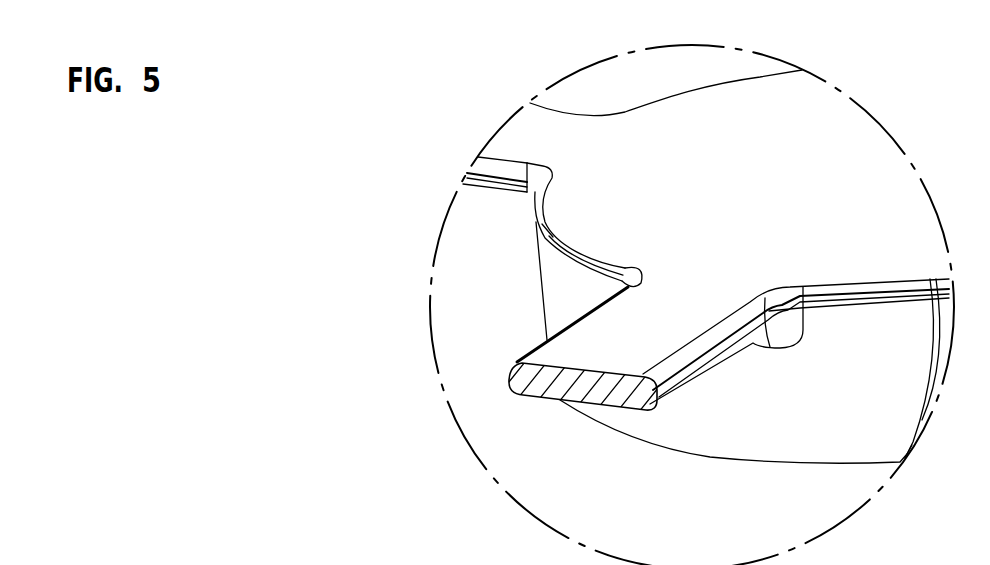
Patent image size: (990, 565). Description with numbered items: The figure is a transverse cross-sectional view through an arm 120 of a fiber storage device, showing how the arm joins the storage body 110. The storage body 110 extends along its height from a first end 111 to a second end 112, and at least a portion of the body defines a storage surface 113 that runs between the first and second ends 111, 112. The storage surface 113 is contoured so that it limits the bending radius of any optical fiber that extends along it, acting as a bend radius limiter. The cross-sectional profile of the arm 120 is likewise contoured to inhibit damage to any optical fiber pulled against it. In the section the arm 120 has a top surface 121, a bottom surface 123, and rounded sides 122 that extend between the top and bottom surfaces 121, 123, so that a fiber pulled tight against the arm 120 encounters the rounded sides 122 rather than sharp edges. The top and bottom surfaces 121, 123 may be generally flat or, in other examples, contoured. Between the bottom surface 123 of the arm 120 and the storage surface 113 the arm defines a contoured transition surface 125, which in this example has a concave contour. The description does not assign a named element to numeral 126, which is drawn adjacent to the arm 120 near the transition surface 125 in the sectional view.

The storage body 110 is at (530, 253).
The first end 111 is at (733, 466).
The second end 112 is at (840, 181).
The storage surface 113 is at (898, 415).
The arm 120 is at (632, 311).
The top surface 121 is at (597, 371).
The rounded sides 122 is at (515, 373).
The bottom surface 123 is at (545, 402).
The transition surface 125 is at (752, 348).
The rail groove 126 is at (790, 316).